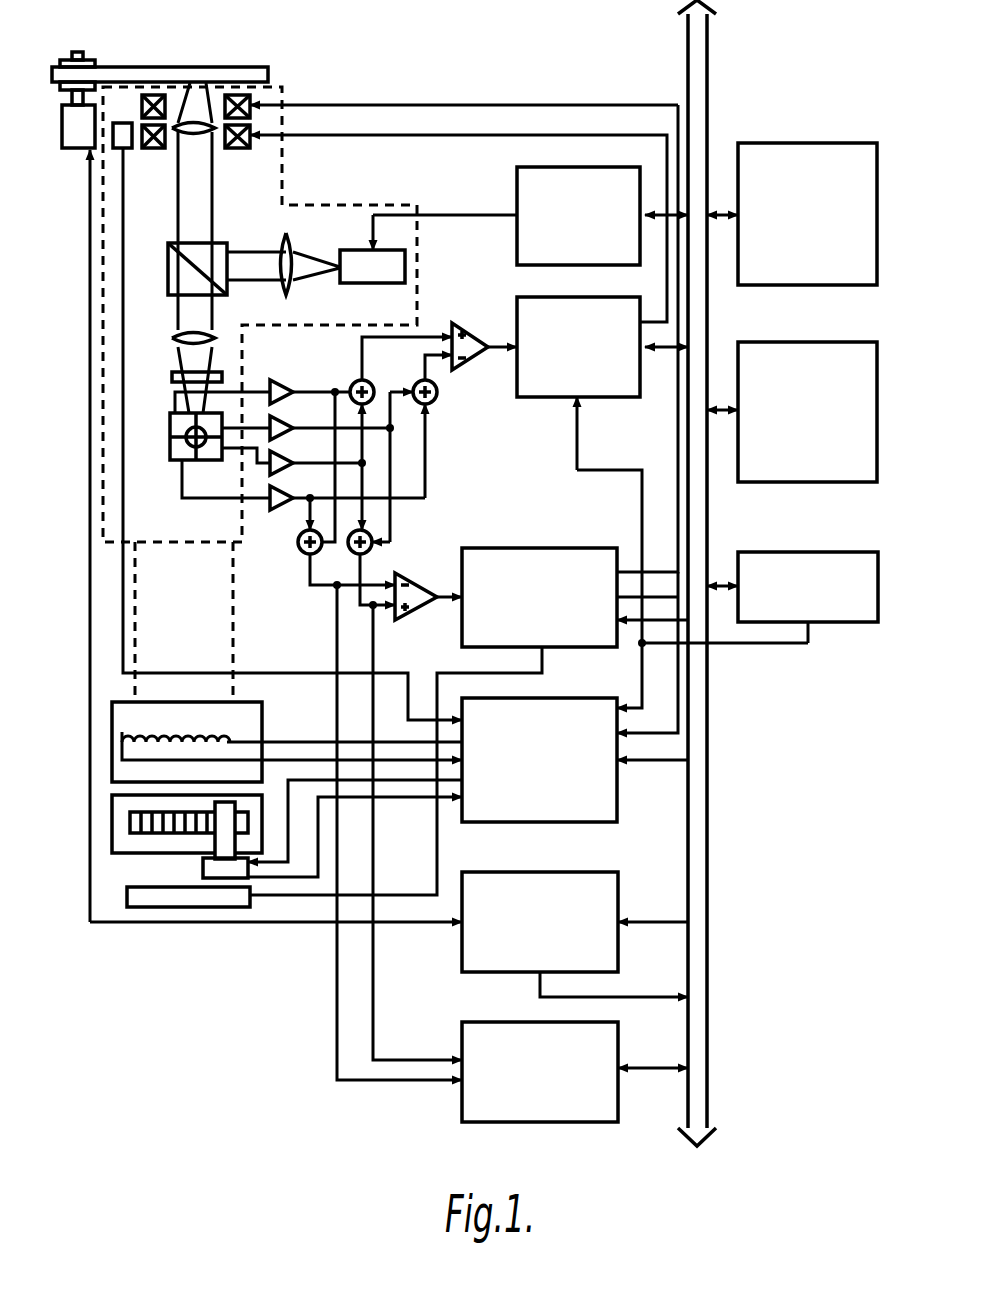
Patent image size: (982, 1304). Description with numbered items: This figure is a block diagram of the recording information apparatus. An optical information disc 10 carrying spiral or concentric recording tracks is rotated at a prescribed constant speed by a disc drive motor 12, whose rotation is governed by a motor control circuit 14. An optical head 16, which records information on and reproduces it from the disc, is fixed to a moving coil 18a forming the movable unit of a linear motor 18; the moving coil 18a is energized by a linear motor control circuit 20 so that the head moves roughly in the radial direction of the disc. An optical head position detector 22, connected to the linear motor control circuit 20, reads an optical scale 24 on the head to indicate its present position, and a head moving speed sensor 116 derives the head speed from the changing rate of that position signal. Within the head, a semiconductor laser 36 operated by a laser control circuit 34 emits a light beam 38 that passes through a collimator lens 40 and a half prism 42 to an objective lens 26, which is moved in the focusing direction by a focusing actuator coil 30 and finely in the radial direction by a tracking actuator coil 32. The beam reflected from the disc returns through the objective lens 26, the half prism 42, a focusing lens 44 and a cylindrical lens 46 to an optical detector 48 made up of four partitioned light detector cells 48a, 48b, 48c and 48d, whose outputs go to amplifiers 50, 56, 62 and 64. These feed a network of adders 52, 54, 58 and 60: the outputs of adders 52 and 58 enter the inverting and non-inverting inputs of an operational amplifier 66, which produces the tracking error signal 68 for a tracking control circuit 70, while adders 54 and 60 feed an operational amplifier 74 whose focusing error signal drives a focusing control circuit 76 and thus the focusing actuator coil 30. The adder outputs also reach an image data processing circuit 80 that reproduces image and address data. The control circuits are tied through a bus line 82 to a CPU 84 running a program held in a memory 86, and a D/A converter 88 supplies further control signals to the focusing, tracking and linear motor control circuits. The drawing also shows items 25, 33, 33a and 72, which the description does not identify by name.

The optical information disc 10 is at (137, 67).
The disc drive motor 12 is at (73, 150).
The motor control circuit 14 is at (522, 872).
The optical head 16 is at (304, 198).
The linear motor 18 is at (108, 785).
The moving coil 18a is at (123, 735).
The linear motor control circuit 20 is at (560, 698).
The optical head position detector 22 is at (203, 867).
The optical scale 24 is at (112, 830).
The signal line 25 is at (657, 732).
The objective lens 26 is at (186, 122).
The focusing actuator coil 30 is at (230, 150).
The tracking actuator coil 32 is at (258, 95).
The speed detector 33 is at (122, 150).
The speed signal line 33a is at (125, 225).
The laser control circuit 34 is at (575, 167).
The semiconductor laser 36 is at (408, 257).
The light beam 38 is at (204, 122).
The collimator lens 40 is at (292, 243).
The half prism 42 is at (168, 270).
The focusing lens 44 is at (173, 337).
The cylindrical lens 46 is at (172, 378).
The optical detector 48 is at (157, 447).
The light detector cell 48a is at (170, 423).
The light detector cell 48b is at (217, 413).
The light detector cell 48c is at (208, 462).
The light detector cell 48d is at (178, 462).
The amplifier 50 is at (285, 382).
The adder 52 is at (300, 550).
The adder 54 is at (370, 384).
The amplifier 56 is at (287, 416).
The adder 58 is at (347, 551).
The adder 60 is at (437, 394).
The amplifier 62 is at (286, 455).
The amplifier 64 is at (287, 490).
The operational amplifier 66 is at (417, 572).
The tracking error signal 68 is at (441, 602).
The tracking control circuit 70 is at (560, 548).
The signal line 72 is at (657, 568).
The operational amplifier 74 is at (472, 327).
The focusing control circuit 76 is at (560, 399).
The image data processing circuit 80 is at (522, 1022).
The bus line 82 is at (710, 1038).
The CPU 84 is at (822, 145).
The memory 86 is at (815, 343).
The D/A converter 88 is at (822, 552).
The head moving speed sensor 116 is at (168, 908).